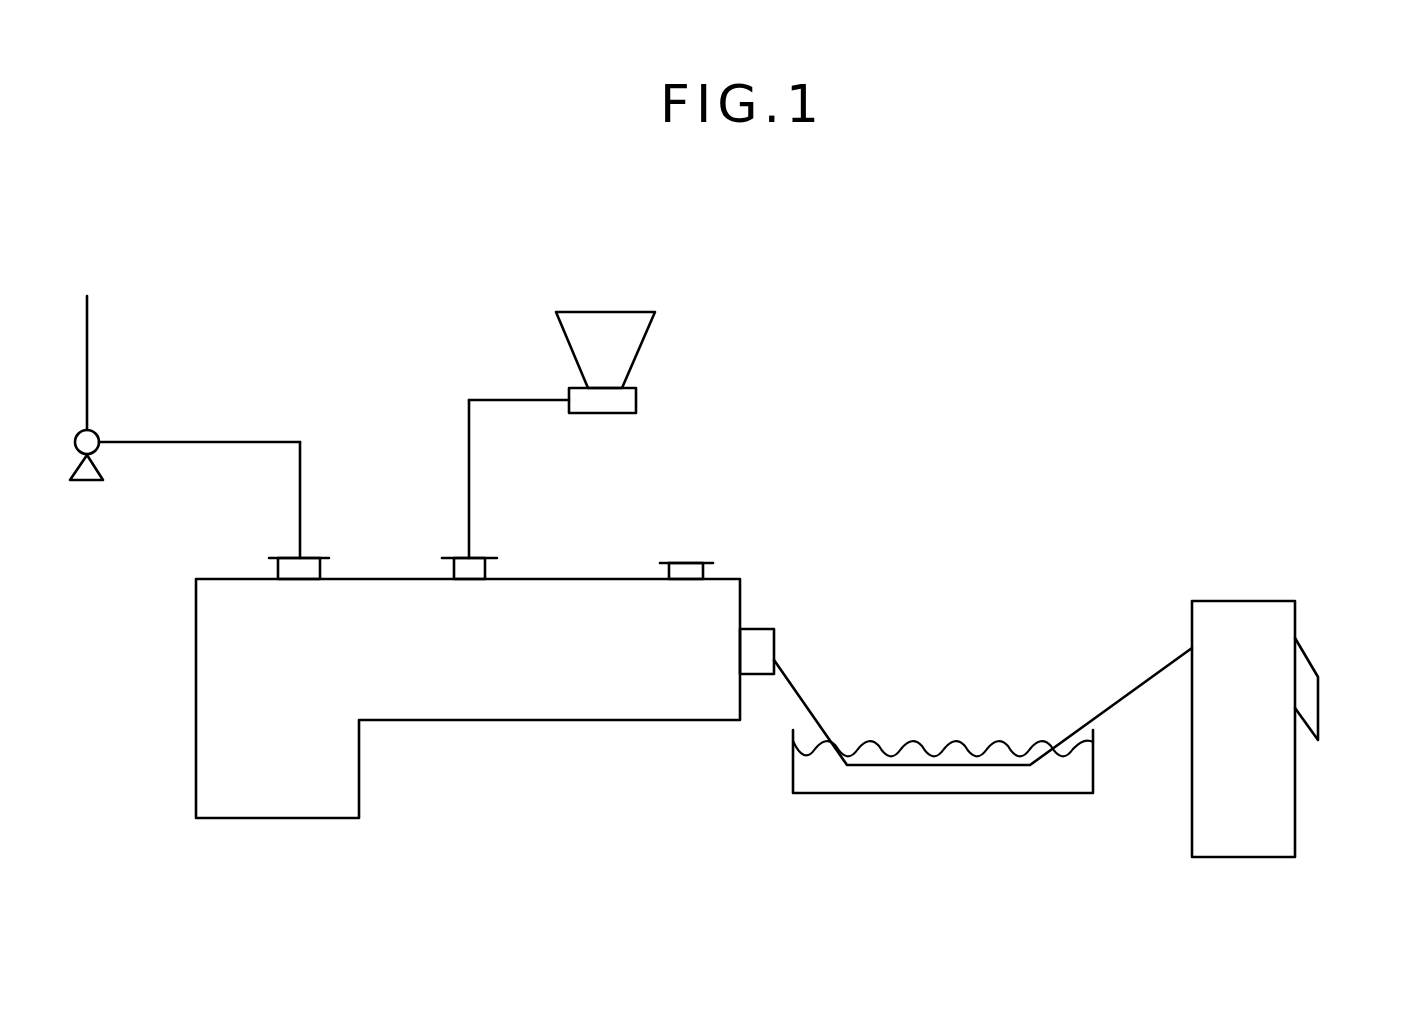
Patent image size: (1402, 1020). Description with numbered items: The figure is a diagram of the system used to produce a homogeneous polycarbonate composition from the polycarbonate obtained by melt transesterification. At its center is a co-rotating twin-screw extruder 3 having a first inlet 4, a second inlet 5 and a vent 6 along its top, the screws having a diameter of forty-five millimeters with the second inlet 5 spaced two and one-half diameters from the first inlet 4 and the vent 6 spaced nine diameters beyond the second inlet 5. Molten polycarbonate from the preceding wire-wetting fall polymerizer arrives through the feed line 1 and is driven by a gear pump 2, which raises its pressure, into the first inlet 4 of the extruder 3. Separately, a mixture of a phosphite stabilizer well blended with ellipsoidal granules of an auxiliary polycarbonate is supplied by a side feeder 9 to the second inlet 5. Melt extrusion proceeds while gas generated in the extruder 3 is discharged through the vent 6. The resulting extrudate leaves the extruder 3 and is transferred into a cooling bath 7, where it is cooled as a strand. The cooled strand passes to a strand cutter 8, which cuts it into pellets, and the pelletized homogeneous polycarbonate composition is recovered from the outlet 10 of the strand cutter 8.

The feed line 1 is at (78, 296).
The gear pump 2 is at (99, 468).
The co-rotating twin-screw extruder 3 is at (208, 786).
The first inlet 4 is at (308, 558).
The second inlet 5 is at (460, 559).
The vent 6 is at (684, 563).
The cooling bath 7 is at (1080, 770).
The strand cutter 8 is at (1203, 835).
The side feeder 9 is at (622, 358).
The outlet for pellets 10 is at (1320, 715).